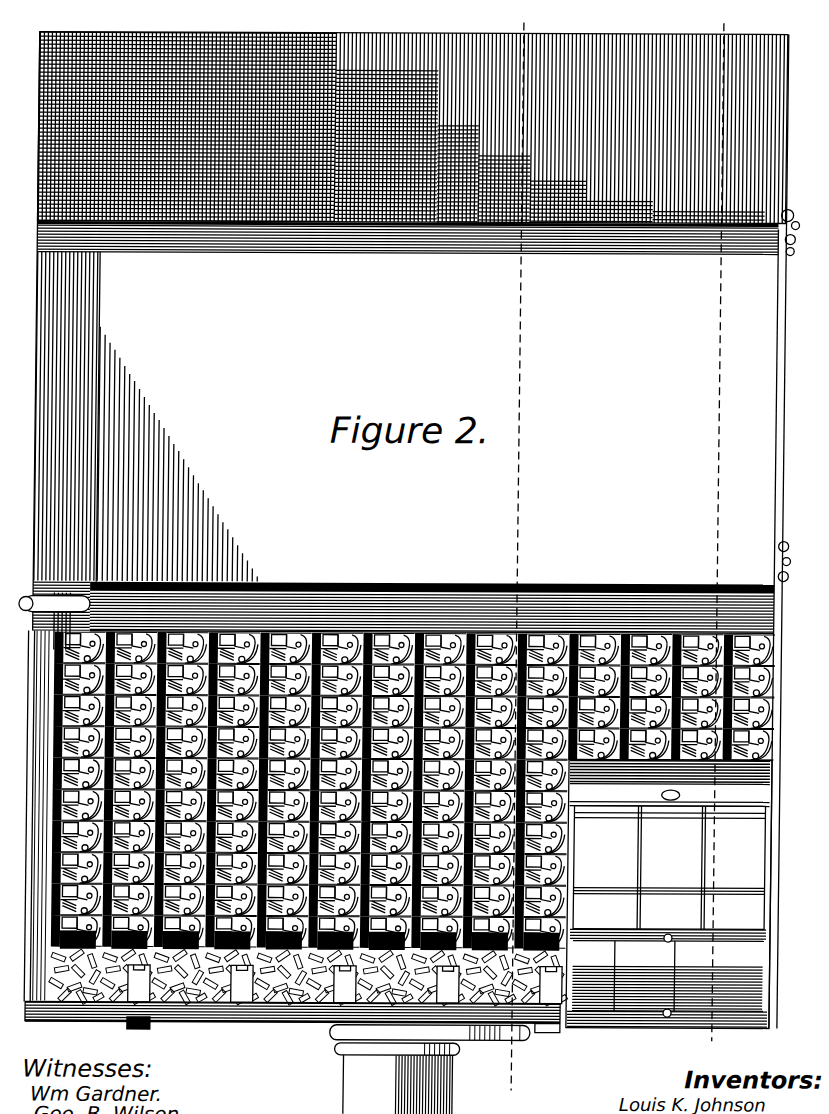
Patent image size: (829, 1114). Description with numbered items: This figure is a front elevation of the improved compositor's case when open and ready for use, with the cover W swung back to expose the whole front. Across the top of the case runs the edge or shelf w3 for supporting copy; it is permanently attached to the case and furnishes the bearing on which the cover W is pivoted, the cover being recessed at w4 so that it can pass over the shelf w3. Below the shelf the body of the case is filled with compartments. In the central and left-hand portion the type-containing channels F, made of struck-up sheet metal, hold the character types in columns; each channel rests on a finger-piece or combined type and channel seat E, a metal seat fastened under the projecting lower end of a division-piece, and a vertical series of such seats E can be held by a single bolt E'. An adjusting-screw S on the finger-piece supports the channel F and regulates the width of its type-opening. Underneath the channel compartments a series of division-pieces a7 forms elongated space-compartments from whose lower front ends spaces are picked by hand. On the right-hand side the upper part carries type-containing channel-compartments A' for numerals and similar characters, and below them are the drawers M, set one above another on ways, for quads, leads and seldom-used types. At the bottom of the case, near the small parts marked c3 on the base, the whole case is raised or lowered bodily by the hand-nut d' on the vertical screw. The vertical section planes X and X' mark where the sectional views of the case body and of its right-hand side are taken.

The type case A is at (413, 128).
The cover W is at (218, 332).
The edge or shelf w3 is at (432, 613).
The recess w4 is at (432, 579).
The type-containing channels F is at (79, 648).
The finger-pieces or combined type and channel seats E is at (234, 648).
The type-containing channel-compartments A' is at (762, 681).
The bolt E' is at (759, 745).
The adjusting-screw S is at (770, 776).
The drawers or sliding compartments M is at (669, 894).
The division-pieces a7 is at (340, 978).
The bracket c3 is at (345, 1032).
The hand-nut d' is at (430, 1041).
The line x x X is at (512, 558).
The line x' x' X' is at (715, 533).